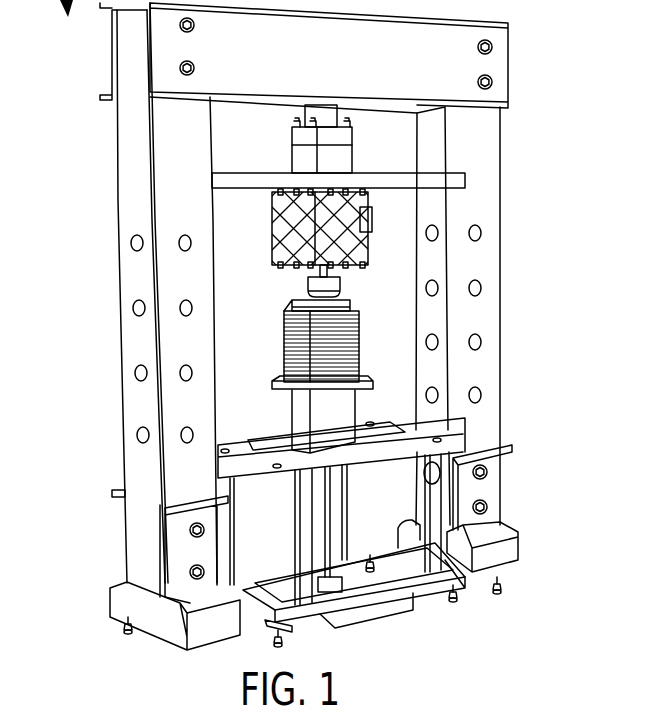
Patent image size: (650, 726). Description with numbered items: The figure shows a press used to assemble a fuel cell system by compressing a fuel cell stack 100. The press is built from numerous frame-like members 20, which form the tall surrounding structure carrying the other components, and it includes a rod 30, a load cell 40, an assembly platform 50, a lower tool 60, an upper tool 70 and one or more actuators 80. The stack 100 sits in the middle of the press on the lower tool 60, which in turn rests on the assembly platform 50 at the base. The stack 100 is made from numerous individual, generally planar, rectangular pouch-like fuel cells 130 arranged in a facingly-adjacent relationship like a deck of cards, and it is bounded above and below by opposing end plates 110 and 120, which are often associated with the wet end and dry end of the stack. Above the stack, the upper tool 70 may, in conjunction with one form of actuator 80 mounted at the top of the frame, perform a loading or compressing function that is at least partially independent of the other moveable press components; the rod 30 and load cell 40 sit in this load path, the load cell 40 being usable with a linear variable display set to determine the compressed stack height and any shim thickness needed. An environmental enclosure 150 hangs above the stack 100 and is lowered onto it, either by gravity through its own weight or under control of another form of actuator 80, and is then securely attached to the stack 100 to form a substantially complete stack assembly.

The frame-like members 20 is at (500, 138).
The rod 30 is at (328, 271).
The load cell 40 is at (305, 283).
The assembly platform 50 is at (465, 443).
The lower tool 60 is at (330, 398).
The upper tool 70 is at (353, 302).
The actuator 80 is at (337, 155).
The fuel cell stack 100 is at (262, 311).
The end plate 110 is at (353, 383).
The end plate 120 is at (355, 313).
The fuel cells 130 is at (353, 340).
The environmental enclosure 150 is at (297, 208).